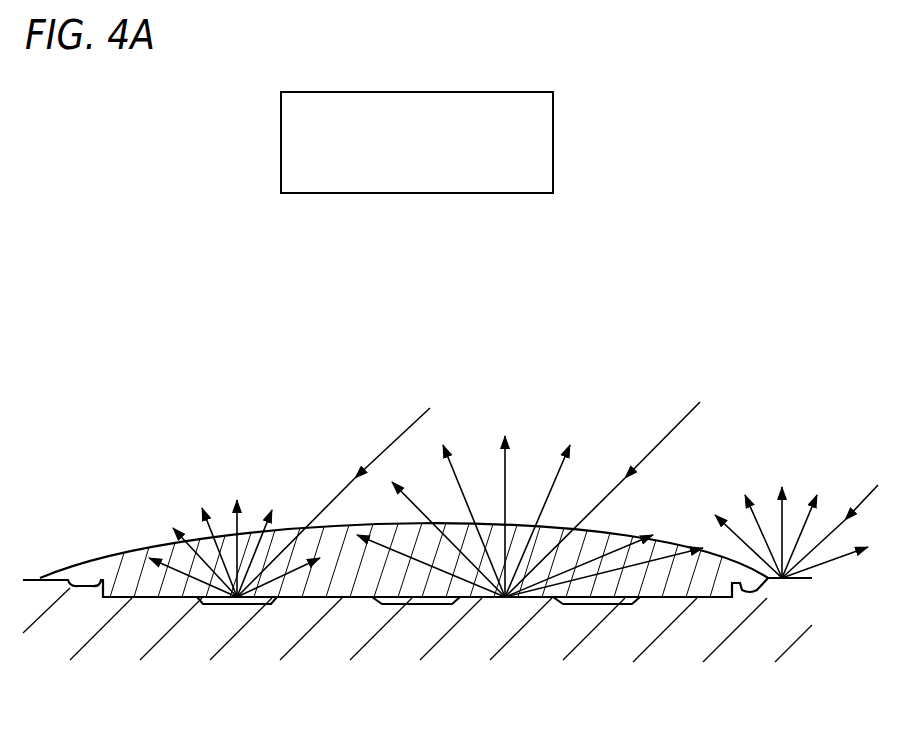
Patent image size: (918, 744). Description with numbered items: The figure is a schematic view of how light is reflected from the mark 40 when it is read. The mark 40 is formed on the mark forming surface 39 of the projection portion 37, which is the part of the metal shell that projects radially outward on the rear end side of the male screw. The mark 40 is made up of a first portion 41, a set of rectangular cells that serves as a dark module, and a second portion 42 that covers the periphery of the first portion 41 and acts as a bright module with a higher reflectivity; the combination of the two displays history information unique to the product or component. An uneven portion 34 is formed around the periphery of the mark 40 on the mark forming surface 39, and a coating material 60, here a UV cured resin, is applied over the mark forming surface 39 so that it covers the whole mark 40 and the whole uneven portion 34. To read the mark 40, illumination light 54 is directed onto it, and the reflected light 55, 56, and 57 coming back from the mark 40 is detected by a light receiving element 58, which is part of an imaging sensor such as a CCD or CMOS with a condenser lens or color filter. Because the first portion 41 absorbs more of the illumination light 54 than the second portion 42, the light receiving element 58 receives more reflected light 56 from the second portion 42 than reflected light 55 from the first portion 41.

The uneven portion 34 is at (80, 583).
The projection portion 37 is at (555, 643).
The mark forming surface 39 is at (36, 578).
The mark 40 is at (217, 335).
The first portion 41 is at (210, 607).
The second portion 42 is at (338, 573).
The illumination light 54 is at (400, 430).
The reflected light 55 is at (245, 523).
The reflected light 56 is at (506, 478).
The reflected light 57 is at (777, 513).
The light receiving element 58 is at (520, 137).
The coating material 60 is at (127, 565).